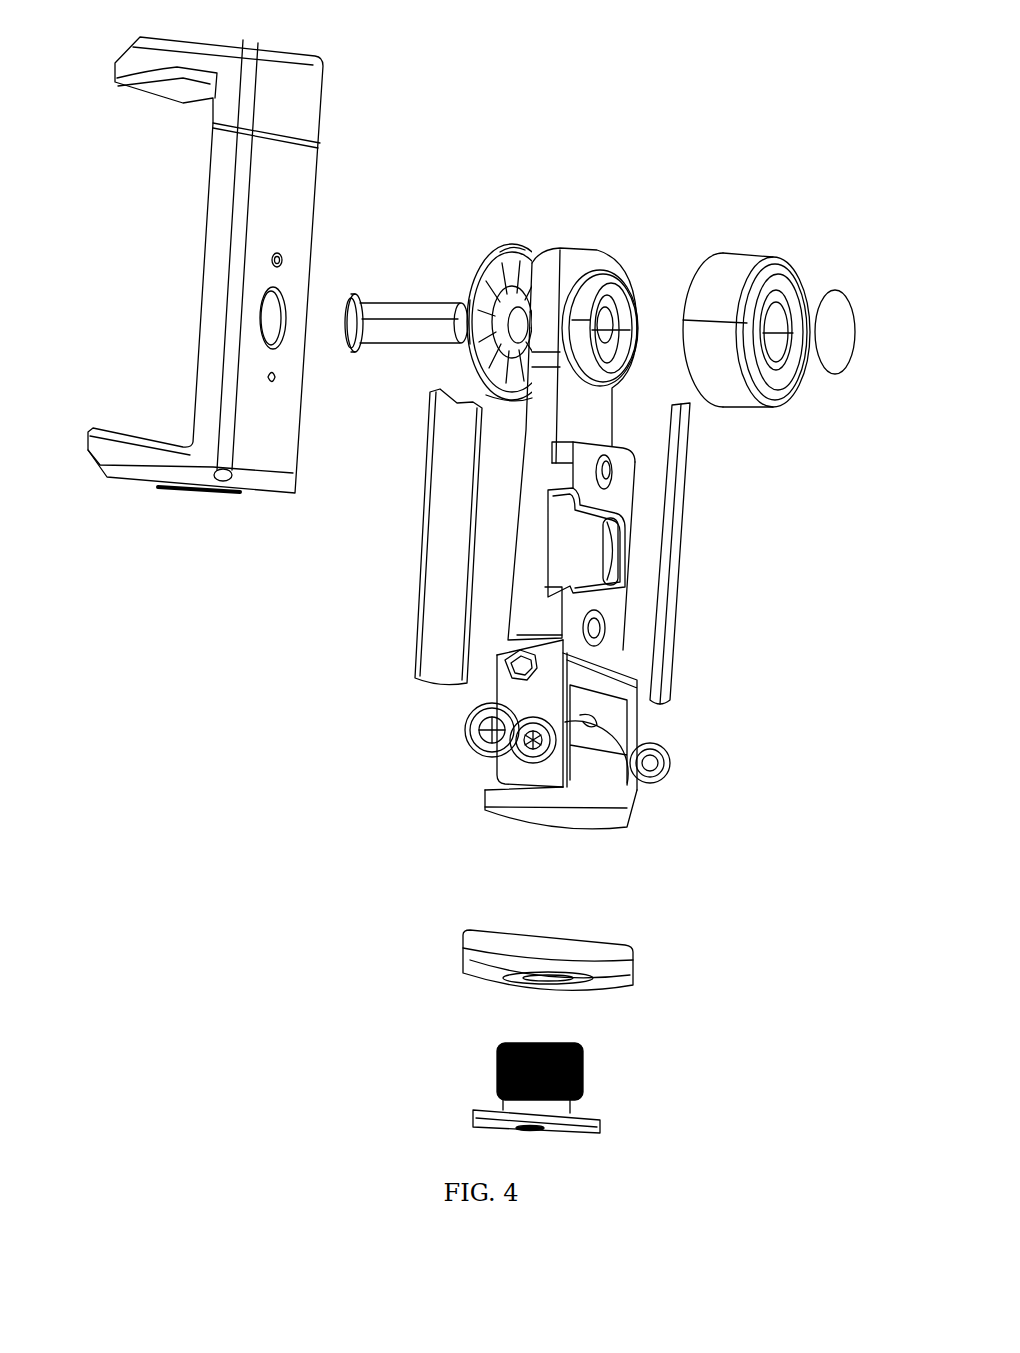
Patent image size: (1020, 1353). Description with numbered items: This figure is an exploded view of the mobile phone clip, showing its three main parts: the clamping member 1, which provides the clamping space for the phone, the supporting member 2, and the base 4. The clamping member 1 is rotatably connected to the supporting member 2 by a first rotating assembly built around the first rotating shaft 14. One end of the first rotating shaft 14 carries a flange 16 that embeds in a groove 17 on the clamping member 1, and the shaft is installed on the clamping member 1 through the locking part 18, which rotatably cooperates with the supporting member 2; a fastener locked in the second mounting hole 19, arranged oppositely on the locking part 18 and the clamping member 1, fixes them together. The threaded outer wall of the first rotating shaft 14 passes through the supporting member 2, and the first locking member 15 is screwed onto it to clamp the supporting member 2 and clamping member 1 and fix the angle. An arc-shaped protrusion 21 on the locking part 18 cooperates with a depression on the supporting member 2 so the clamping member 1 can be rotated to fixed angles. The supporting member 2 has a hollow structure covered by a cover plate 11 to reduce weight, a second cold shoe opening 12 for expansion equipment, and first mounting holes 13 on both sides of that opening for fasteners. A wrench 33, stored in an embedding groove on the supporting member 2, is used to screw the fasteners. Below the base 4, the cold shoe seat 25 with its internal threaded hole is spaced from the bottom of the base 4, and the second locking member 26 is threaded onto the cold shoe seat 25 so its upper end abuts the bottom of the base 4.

The clamping member 1 is at (323, 107).
The supporting member 2 is at (598, 252).
The base 4 is at (632, 808).
The cover plate 11 is at (433, 497).
The second cold shoe opening 12 is at (583, 545).
The first mounting hole 13 is at (613, 472).
The first rotating shaft 14 is at (466, 262).
The first locking member 15 is at (517, 248).
The flange 16 is at (397, 310).
The groove 17 is at (268, 320).
The locking part 18 is at (740, 263).
The second mounting hole 19 is at (280, 260).
The arc-shaped protrusion 21 is at (487, 355).
The cold shoe seat 25 is at (577, 1096).
The second locking member 26 is at (633, 967).
The wrench 33 is at (670, 658).